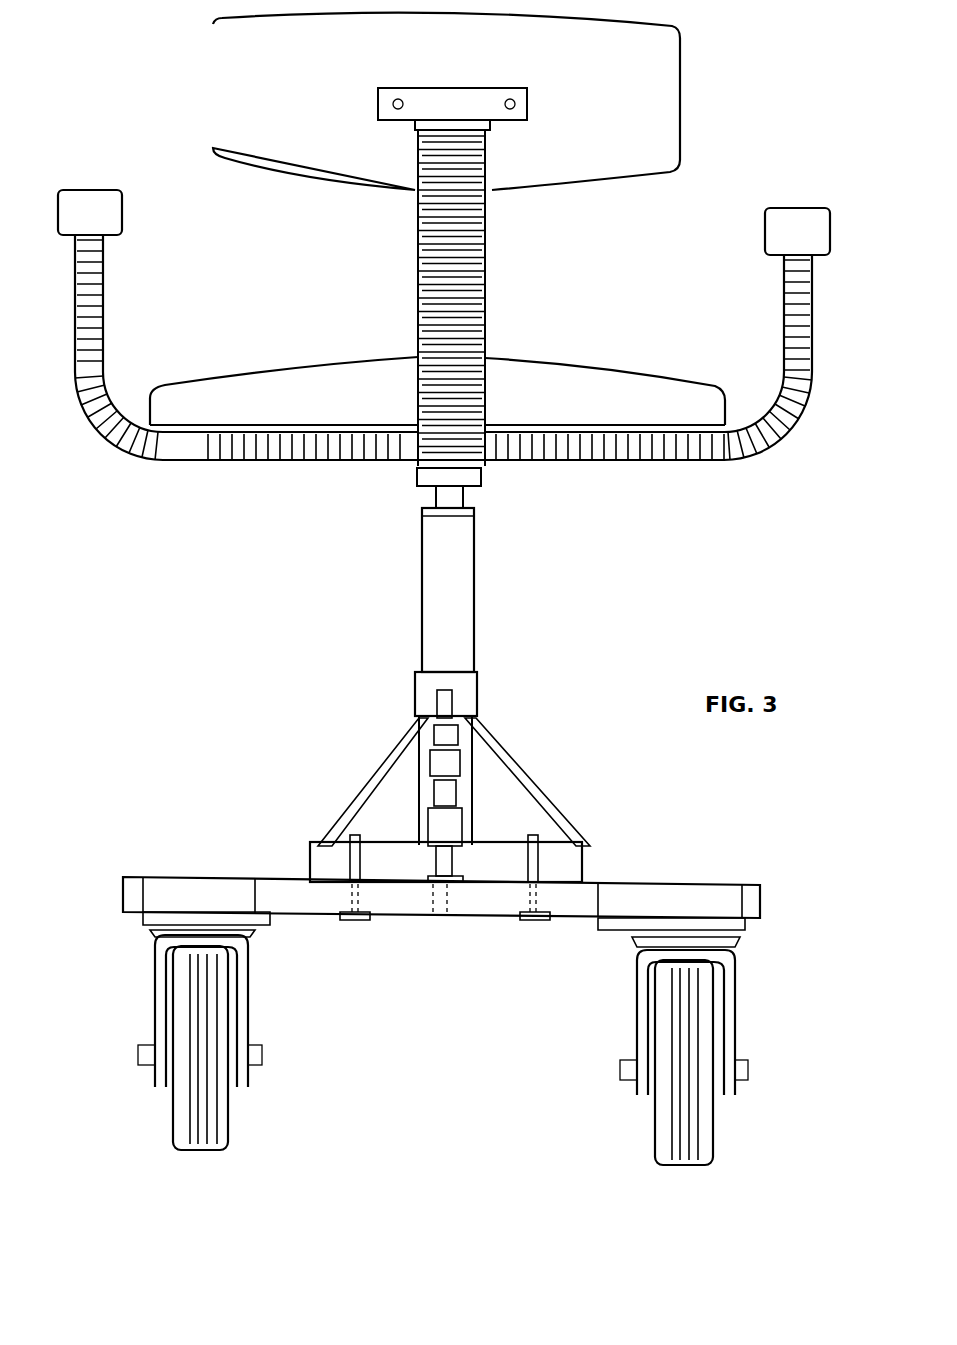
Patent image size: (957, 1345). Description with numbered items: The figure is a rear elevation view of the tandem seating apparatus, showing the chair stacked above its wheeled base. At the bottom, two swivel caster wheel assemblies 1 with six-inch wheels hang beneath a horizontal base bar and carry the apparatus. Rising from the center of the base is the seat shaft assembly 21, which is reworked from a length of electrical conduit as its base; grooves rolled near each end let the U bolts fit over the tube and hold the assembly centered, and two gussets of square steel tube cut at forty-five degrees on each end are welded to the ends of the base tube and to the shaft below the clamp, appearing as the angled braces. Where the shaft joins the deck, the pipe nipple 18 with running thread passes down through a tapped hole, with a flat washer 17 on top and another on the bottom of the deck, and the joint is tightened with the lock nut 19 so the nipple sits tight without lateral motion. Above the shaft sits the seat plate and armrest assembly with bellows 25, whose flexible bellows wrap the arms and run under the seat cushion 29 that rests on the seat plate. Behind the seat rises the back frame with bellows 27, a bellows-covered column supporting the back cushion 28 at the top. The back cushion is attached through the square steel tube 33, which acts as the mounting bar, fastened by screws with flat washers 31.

The swivel caster wheel assembly 1 is at (740, 1022).
The flat washer 17 is at (460, 875).
The pipe nipple 18 is at (430, 903).
The lock nut 19 is at (440, 919).
The seat shaft assembly 21 is at (462, 585).
The seat plate and armrest assembly with bellows 25 is at (812, 352).
The back frame with bellows 27 is at (486, 272).
The back cushion 28 is at (680, 92).
The seat cushion 29 is at (296, 366).
The screw with flat washer 31 is at (380, 103).
The square steel tube 33 is at (527, 104).